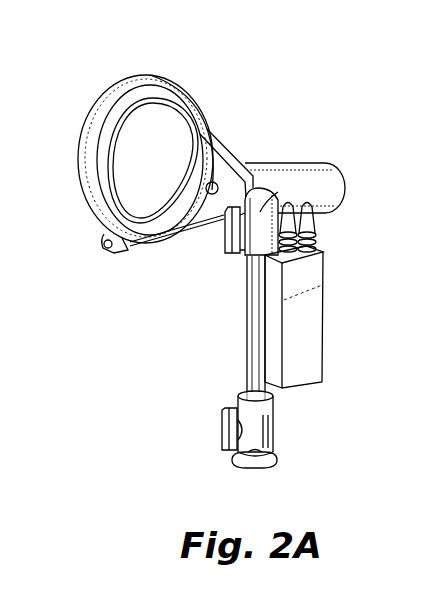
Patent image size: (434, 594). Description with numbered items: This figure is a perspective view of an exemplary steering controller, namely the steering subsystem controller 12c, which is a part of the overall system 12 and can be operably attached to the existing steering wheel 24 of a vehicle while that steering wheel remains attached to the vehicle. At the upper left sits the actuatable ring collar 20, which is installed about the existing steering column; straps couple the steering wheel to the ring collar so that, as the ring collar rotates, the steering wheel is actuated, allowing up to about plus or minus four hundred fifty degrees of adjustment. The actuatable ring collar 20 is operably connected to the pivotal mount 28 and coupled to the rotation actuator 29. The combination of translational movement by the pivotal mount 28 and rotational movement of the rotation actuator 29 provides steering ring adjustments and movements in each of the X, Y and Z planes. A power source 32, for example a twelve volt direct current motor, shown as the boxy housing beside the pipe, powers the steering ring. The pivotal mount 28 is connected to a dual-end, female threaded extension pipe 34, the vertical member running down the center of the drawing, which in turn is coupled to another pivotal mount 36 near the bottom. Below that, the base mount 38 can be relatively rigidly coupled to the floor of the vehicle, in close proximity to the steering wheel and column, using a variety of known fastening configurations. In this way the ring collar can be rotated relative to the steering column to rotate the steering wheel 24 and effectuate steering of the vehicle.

The steering subsystem controller 12c is at (96, 62).
The illumination device 12 is at (427, 548).
The actuatable ring collar 20 is at (193, 91).
The rotation actuator 29 is at (263, 163).
The pivotal mount 28 is at (297, 163).
The power source 32 is at (325, 265).
The dual-end, female threaded extension pipe 34 is at (246, 302).
The pivotal mount 36 is at (240, 397).
The base mount 38 is at (232, 458).
The steering wheel 24 is at (292, 403).